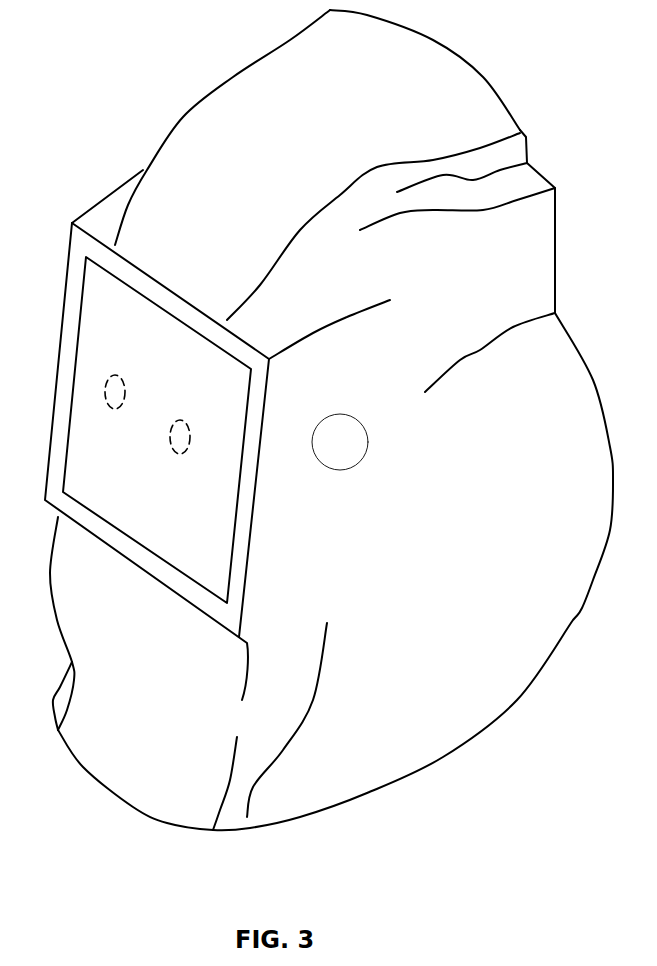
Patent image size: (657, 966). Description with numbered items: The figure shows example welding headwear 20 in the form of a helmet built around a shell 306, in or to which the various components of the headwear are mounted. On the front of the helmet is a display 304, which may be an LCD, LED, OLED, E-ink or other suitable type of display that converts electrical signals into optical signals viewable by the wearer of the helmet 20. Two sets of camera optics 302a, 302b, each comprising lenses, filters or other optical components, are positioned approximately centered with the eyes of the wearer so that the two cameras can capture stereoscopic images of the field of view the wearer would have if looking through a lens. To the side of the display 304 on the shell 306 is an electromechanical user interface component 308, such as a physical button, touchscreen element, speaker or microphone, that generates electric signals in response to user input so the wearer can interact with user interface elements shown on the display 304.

The headwear 20 is at (326, 418).
The optics 302a is at (115, 374).
The optics 302b is at (182, 418).
The display 304 is at (135, 462).
The shell 306 is at (307, 38).
The electromechanical user interface components 308 is at (340, 414).